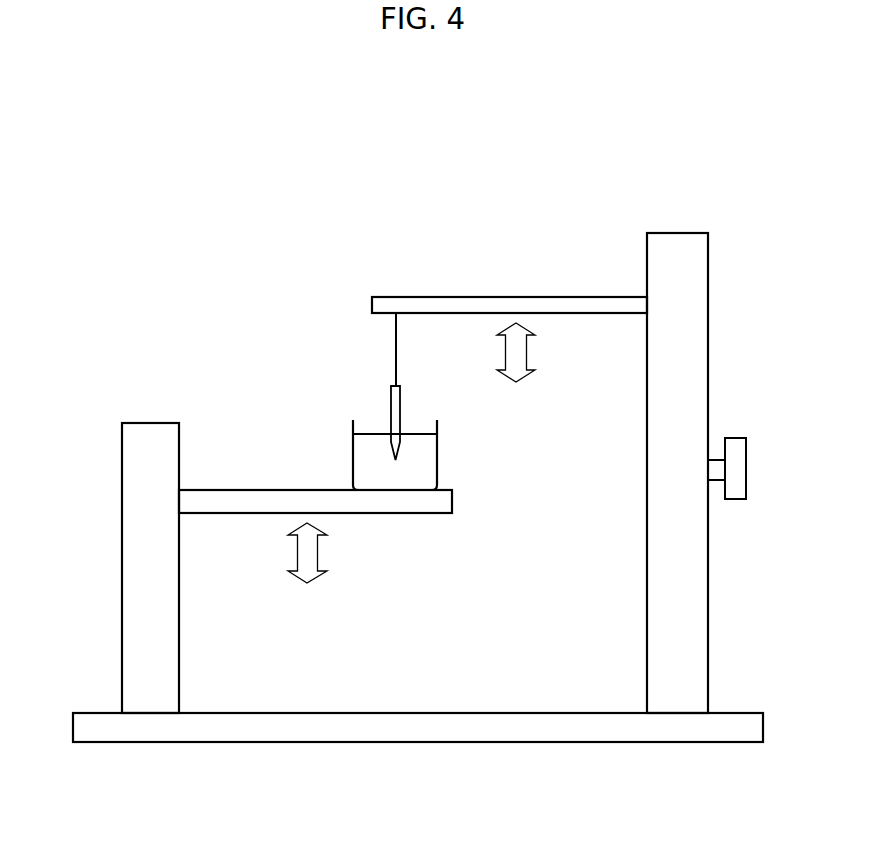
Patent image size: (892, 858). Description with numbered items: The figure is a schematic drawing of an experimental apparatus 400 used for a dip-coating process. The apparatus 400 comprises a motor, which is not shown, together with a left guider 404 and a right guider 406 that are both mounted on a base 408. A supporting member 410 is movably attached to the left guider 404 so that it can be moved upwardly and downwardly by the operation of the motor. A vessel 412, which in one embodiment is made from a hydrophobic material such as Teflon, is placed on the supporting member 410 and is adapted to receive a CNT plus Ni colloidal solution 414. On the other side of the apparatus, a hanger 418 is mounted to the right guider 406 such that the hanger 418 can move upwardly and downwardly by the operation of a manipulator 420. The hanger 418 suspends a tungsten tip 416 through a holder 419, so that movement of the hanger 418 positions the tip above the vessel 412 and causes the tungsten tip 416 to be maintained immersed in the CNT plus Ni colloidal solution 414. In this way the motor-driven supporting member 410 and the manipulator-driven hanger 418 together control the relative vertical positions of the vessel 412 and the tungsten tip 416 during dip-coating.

The experimental apparatus 400 is at (270, 162).
The left guider 404 is at (148, 430).
The right guider 406 is at (675, 240).
The base 408 is at (425, 737).
The supporting member 410 is at (402, 500).
The vessel 412 is at (437, 422).
The CNT plus Ni colloidal solution 414 is at (420, 463).
The tungsten tip 416 is at (400, 400).
The hanger 418 is at (456, 300).
The holder 419 is at (394, 335).
The manipulator 420 is at (737, 435).